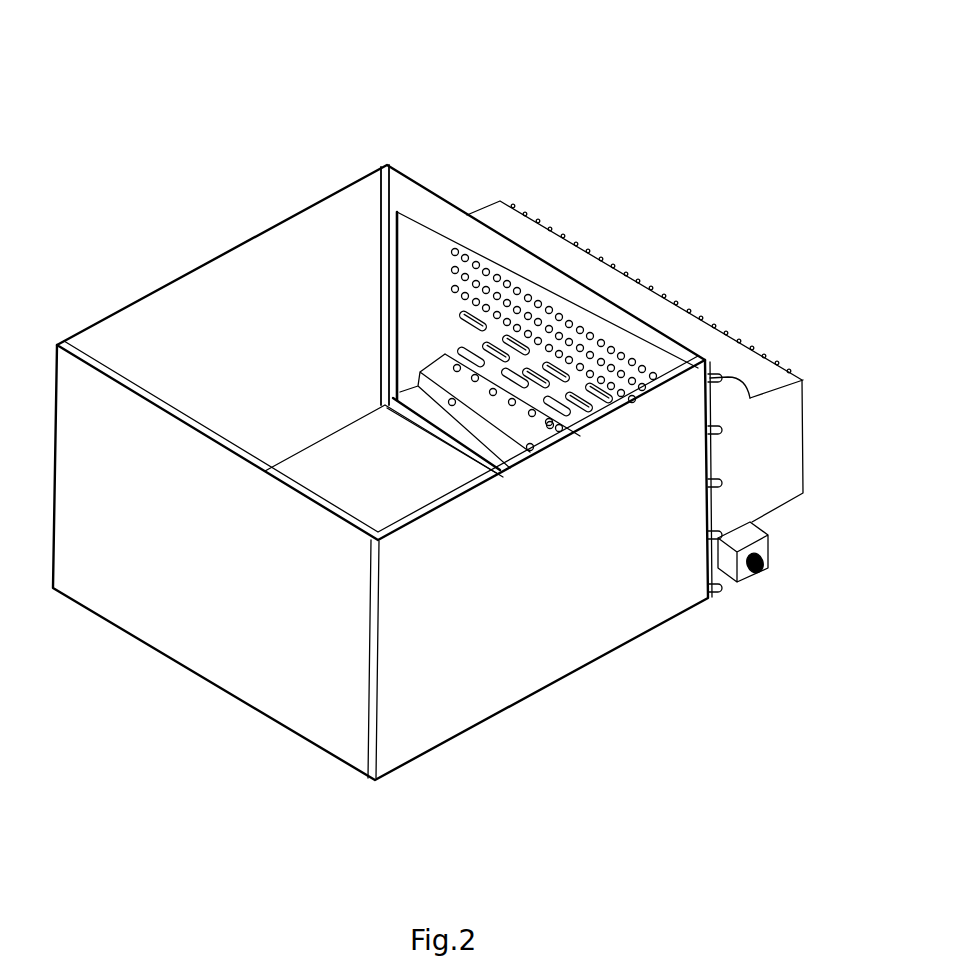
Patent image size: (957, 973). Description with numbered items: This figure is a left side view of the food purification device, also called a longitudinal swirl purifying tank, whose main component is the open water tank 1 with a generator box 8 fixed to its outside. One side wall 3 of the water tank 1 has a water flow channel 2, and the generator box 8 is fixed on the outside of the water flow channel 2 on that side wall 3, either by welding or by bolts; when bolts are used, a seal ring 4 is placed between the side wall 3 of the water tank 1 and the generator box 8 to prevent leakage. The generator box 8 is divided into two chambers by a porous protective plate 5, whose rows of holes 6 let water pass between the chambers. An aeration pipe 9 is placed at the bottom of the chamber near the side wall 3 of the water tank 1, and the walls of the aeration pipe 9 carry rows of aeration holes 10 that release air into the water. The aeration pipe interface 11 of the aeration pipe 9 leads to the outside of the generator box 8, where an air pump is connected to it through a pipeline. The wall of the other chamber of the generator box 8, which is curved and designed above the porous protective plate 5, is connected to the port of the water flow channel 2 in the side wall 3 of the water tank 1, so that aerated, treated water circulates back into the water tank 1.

The water tank 1 is at (180, 302).
The water flow channel 2 is at (420, 293).
The side wall 3 is at (428, 210).
The seal ring 4 is at (708, 595).
The porous protective plate 5 is at (463, 283).
The hole 6 is at (507, 300).
The generator box 8 is at (753, 367).
The aeration pipe 9 is at (500, 412).
The aeration hole 10 is at (532, 413).
The aeration pipe interface 11 is at (755, 568).